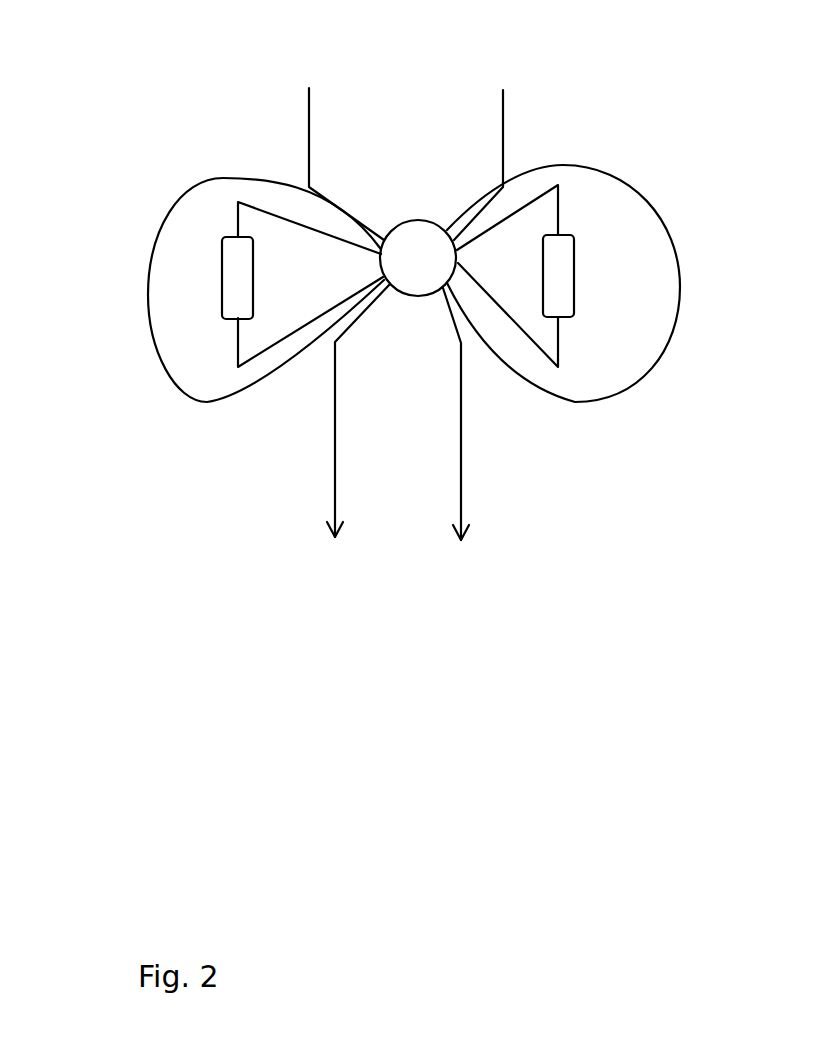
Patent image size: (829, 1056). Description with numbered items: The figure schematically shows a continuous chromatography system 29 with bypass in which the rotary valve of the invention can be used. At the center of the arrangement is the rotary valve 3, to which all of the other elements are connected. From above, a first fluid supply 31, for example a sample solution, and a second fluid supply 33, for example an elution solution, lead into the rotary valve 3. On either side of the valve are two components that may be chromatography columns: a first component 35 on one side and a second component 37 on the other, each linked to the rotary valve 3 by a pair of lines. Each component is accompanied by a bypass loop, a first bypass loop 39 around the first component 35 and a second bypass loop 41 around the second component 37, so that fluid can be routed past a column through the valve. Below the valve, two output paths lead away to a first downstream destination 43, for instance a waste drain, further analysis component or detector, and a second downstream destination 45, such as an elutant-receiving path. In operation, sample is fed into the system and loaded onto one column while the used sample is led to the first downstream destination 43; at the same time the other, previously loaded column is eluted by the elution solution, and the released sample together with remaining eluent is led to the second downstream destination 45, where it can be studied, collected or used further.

The continuous chromatography system 29 is at (166, 149).
The rotary valve 3 is at (427, 221).
The second fluid supply 33 is at (308, 128).
The first fluid supply 31 is at (503, 140).
The first component 35 is at (222, 278).
The second component 37 is at (575, 275).
The first bypass loop 39 is at (163, 360).
The second bypass loop 41 is at (572, 403).
The first downstream destination 43 is at (335, 490).
The second downstream destination 45 is at (460, 477).